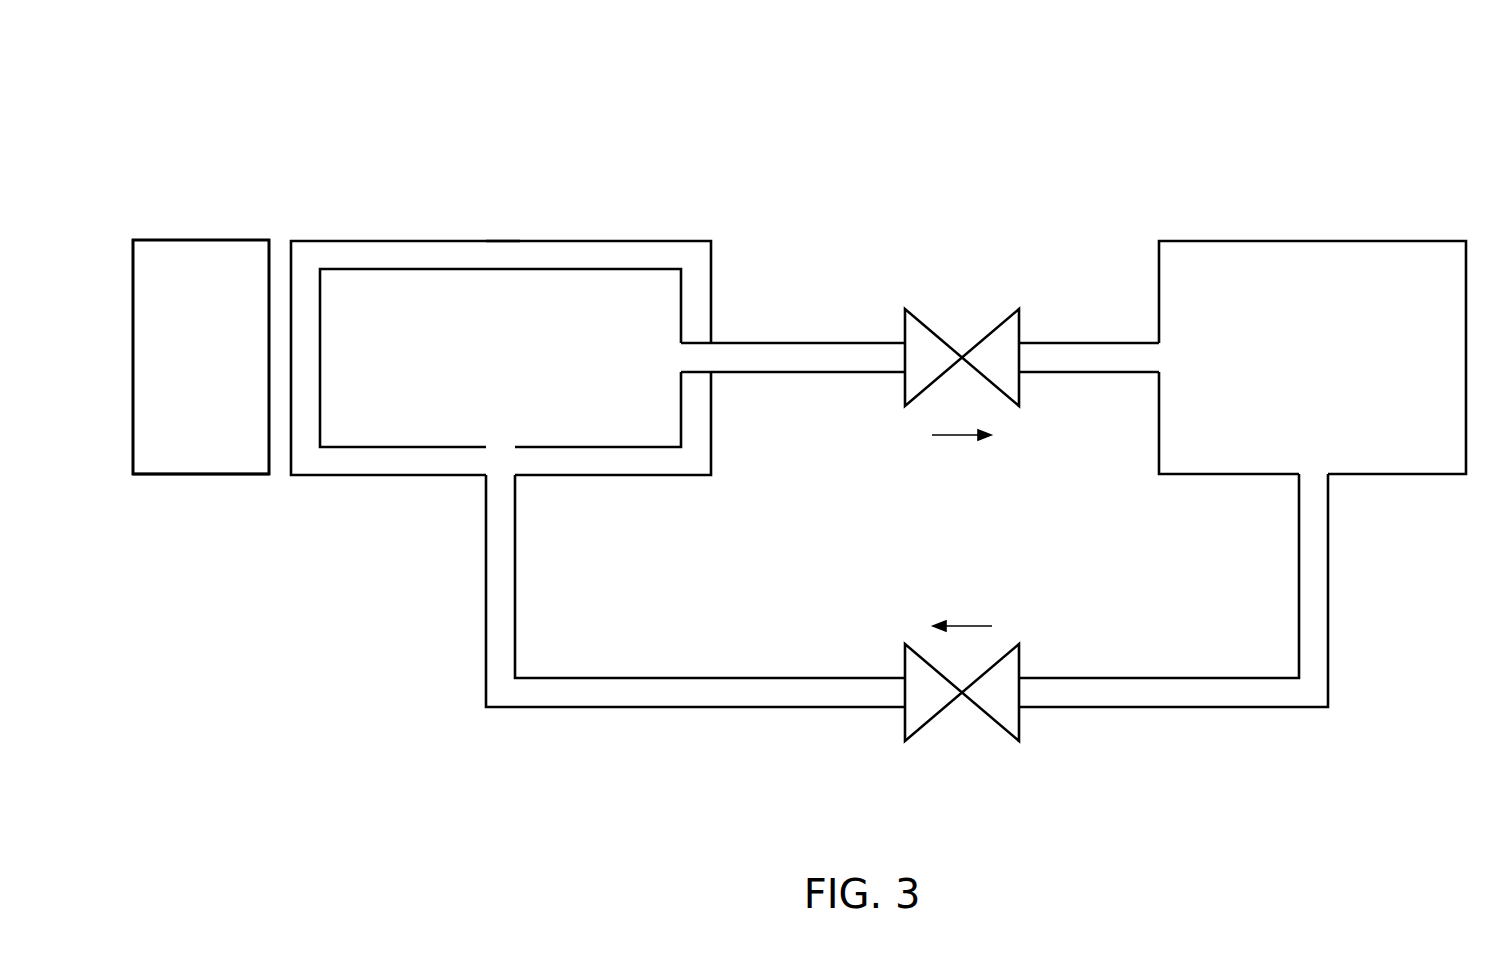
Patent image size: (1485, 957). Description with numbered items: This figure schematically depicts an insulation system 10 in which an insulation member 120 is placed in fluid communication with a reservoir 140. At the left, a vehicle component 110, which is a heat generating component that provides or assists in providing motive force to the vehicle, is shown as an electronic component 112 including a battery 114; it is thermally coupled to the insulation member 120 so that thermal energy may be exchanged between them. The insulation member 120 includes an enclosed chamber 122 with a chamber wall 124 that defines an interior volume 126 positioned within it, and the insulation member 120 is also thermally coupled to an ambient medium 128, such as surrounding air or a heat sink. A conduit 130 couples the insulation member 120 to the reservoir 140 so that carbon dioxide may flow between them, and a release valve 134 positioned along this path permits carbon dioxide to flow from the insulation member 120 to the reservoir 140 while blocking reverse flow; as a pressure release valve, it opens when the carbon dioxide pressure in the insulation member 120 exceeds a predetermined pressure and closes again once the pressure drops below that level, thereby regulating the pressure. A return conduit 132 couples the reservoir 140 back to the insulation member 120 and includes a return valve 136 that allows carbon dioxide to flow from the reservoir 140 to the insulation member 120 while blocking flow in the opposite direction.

The insulation system 10 is at (778, 418).
The vehicle component 110 is at (201, 287).
The electronic component 112 is at (180, 301).
The battery 114 is at (201, 476).
The insulation member 120 is at (518, 298).
The enclosed chamber 122 is at (501, 303).
The chamber wall 124 is at (497, 255).
The interior volume 126 is at (524, 371).
The ambient medium 128 is at (418, 215).
The conduit 130 is at (920, 337).
The return conduit 132 is at (907, 646).
The release valve 134 is at (962, 308).
The return valve 136 is at (962, 736).
The reservoir 140 is at (1312, 303).